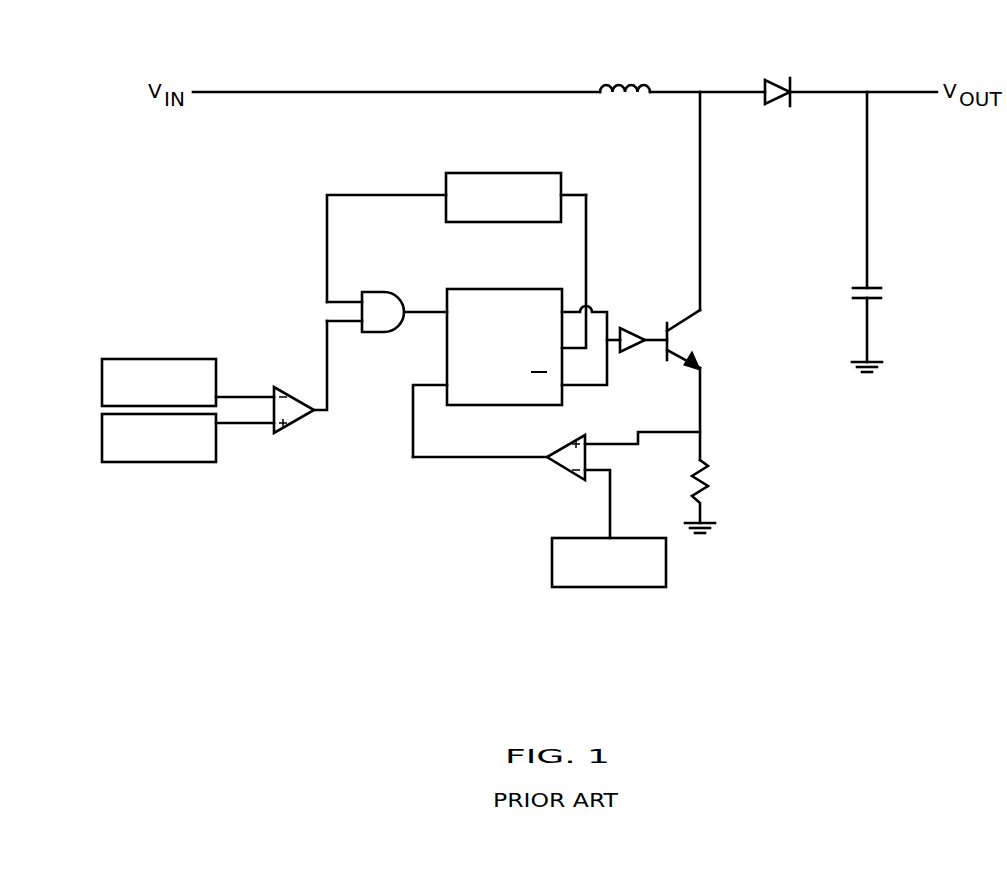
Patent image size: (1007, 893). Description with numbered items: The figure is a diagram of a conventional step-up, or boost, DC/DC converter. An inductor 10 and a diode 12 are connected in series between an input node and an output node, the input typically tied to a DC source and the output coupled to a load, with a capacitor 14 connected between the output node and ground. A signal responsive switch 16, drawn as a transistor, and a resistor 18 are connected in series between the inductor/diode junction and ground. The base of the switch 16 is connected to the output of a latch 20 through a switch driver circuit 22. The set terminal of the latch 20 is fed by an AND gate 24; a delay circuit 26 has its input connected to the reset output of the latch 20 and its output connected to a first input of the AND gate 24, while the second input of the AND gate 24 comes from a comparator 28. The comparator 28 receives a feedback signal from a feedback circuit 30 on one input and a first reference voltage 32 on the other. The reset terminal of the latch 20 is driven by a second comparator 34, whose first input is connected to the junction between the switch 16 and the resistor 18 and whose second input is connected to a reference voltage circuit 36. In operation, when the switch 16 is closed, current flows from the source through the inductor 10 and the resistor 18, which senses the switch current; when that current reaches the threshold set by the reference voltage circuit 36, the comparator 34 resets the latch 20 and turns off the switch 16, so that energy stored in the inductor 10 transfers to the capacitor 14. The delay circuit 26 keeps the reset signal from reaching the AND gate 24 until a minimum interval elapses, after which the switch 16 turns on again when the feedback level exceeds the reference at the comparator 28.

The inductor 10 is at (618, 82).
The diode 12 is at (770, 80).
The capacitor 14 is at (880, 298).
The signal responsive switch 16 is at (690, 349).
The resistor 18 is at (705, 466).
The latch 20 is at (565, 402).
The switch driver circuit 22 is at (627, 325).
The AND gate 24 is at (380, 333).
The delay circuit 26 is at (560, 178).
The comparator 28 is at (290, 425).
The feedback circuit 30 is at (140, 359).
The reference voltage REF1 32 is at (125, 463).
The second comparator 34 is at (565, 470).
The reference voltage circuit 36 is at (630, 588).